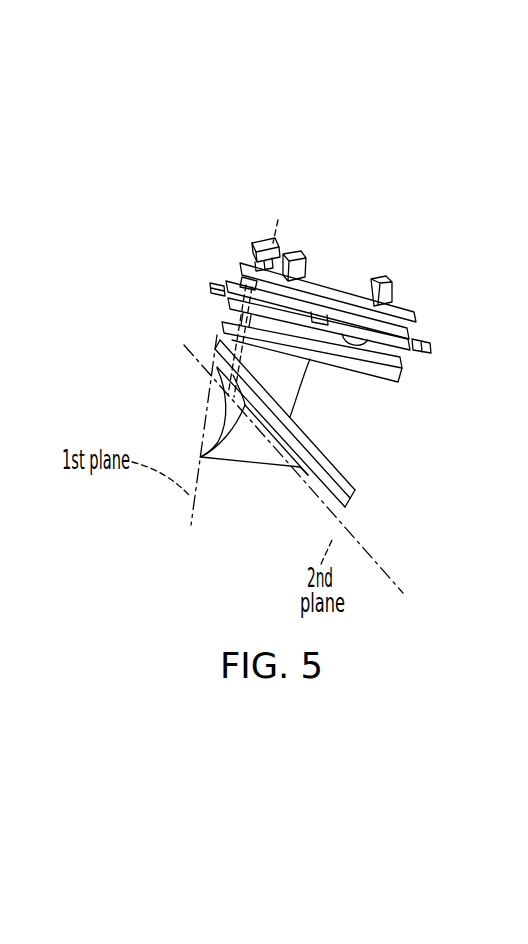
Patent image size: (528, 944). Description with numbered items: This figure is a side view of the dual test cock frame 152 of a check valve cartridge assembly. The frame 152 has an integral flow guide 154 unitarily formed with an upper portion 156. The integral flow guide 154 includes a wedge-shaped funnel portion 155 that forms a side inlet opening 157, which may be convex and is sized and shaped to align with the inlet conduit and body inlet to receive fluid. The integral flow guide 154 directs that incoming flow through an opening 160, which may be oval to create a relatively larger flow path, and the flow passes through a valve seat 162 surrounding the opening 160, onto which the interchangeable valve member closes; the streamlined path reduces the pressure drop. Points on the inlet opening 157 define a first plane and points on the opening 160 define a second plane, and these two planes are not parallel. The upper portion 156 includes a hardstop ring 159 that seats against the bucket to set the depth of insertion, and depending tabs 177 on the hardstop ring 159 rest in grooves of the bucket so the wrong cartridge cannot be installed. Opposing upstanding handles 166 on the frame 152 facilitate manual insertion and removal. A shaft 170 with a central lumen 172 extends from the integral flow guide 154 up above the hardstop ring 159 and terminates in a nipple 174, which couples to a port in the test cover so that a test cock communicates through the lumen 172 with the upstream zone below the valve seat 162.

The frame 152 is at (126, 241).
The integral flow guide 154 is at (284, 467).
The wedge-shaped funnel portion 155 is at (231, 457).
The upper portion 156 is at (218, 283).
The inlet opening 157 is at (224, 424).
The hardstop ring 159 is at (431, 348).
The opening 160 is at (330, 451).
The valve seat 162 is at (342, 471).
The upstanding handles 166 is at (386, 280).
The shaft 170 is at (260, 242).
The central lumen 172 is at (310, 264).
The nipple 174 is at (298, 254).
The depending tabs 177 is at (359, 337).